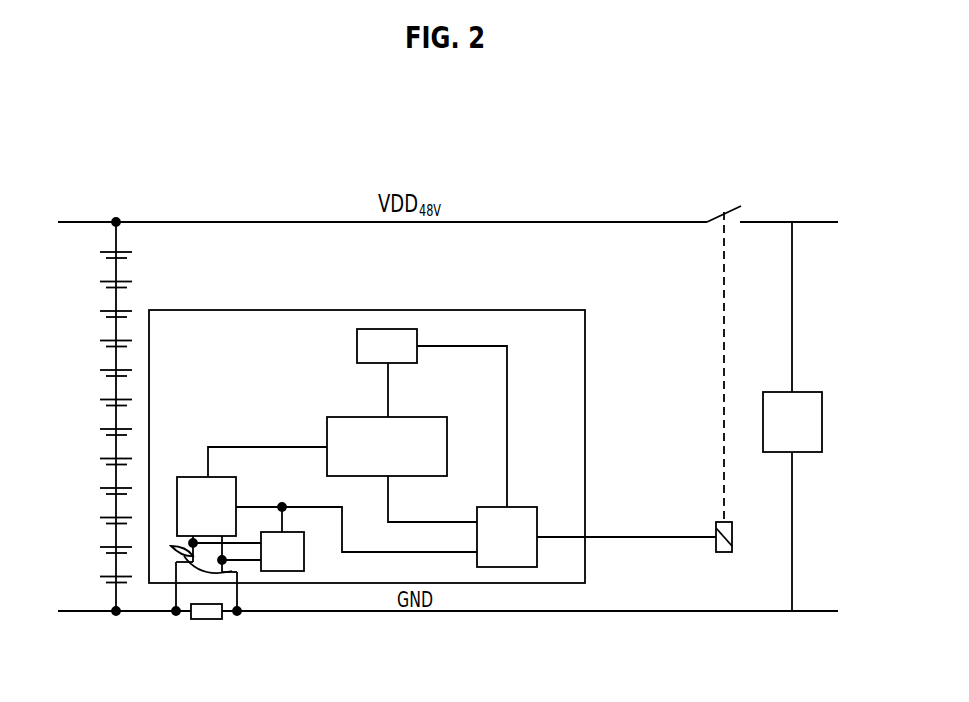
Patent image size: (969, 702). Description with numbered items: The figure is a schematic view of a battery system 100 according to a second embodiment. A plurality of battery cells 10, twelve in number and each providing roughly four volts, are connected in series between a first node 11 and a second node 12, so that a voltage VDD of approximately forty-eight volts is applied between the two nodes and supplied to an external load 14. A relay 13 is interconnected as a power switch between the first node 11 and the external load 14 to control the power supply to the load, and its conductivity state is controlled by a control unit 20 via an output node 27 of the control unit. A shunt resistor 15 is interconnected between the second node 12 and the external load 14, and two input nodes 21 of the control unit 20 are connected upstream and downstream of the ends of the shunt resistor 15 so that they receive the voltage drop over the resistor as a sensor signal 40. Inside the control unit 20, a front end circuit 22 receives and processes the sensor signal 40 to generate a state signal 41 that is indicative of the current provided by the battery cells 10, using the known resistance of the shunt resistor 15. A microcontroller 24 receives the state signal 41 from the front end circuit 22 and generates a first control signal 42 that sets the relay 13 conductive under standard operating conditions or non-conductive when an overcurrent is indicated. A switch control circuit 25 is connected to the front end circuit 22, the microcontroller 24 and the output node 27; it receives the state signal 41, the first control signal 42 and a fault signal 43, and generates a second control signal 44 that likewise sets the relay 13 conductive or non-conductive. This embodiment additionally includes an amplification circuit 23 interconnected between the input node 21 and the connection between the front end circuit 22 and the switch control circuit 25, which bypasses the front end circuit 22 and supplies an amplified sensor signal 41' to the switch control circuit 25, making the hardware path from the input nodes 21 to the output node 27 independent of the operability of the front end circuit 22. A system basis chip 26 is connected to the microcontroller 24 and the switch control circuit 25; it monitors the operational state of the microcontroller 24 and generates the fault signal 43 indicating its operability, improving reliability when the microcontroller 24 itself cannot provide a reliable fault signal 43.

The battery system 100 is at (556, 195).
The battery cells 10 is at (102, 341).
The first node 11 is at (116, 220).
The second node 12 is at (116, 617).
The relay 13 is at (728, 205).
The external load 14 is at (792, 416).
The shunt resistor 15 is at (207, 620).
The control unit 20 is at (370, 308).
The input nodes 21 is at (192, 551).
The front end circuit 22 is at (206, 506).
The amplification circuit 23 is at (282, 551).
The microcontroller 24 is at (387, 446).
The switch control circuit 25 is at (507, 537).
The system basis chip 26 is at (387, 346).
The output node 27 is at (628, 521).
The sensor signal 40 is at (175, 606).
The state signal 41 is at (267, 449).
The amplified sensor signal 41' is at (356, 527).
The first control signal 42 is at (552, 506).
The fault signal 43 is at (462, 412).
The second control signal 44 is at (561, 552).